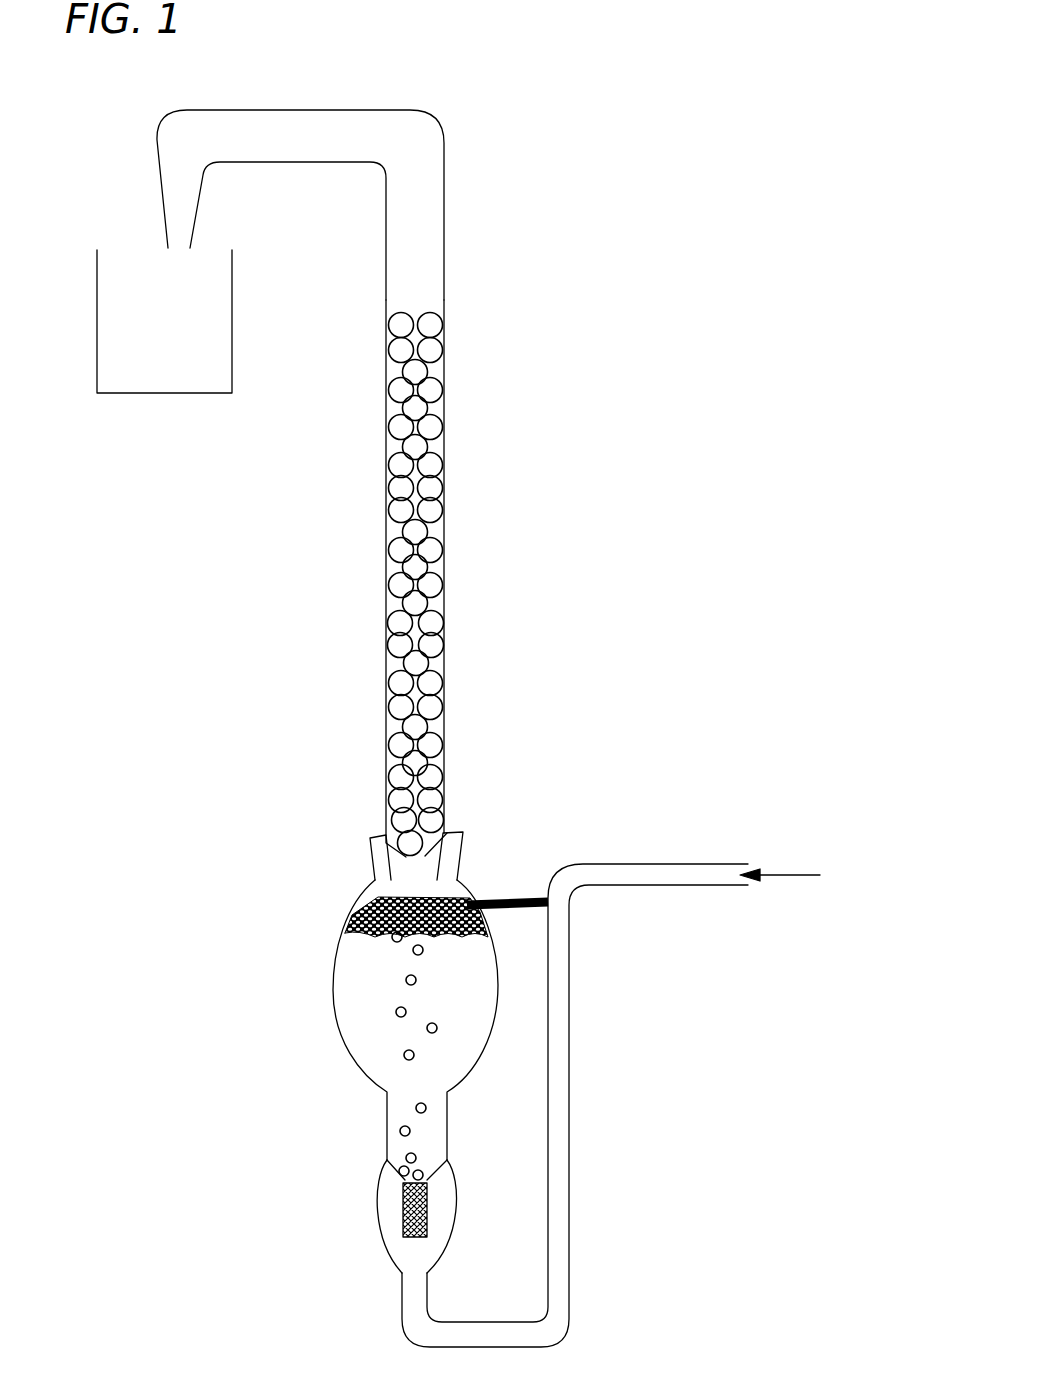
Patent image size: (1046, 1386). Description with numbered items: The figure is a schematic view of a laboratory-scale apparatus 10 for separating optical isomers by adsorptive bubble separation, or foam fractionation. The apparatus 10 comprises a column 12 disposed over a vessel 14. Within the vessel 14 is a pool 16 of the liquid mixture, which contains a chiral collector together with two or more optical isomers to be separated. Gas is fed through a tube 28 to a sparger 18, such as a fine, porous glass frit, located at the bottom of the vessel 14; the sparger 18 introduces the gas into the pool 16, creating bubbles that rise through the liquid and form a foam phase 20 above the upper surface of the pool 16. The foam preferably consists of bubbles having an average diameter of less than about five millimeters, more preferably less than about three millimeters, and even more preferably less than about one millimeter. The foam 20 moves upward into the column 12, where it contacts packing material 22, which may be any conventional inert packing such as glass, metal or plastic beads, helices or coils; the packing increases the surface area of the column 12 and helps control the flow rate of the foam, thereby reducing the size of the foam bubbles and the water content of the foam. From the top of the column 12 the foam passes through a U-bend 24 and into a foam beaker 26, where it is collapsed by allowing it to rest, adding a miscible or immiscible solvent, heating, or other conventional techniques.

The apparatus 10 is at (510, 300).
The column 12 is at (445, 453).
The vessel 14 is at (337, 962).
The pool 16 is at (368, 1033).
The sparger 18 is at (403, 1220).
The foam phase 20 is at (360, 907).
The packing material 22 is at (428, 648).
The U-bend 24 is at (338, 110).
The foam beaker 26 is at (95, 342).
The tube 28 is at (569, 1098).